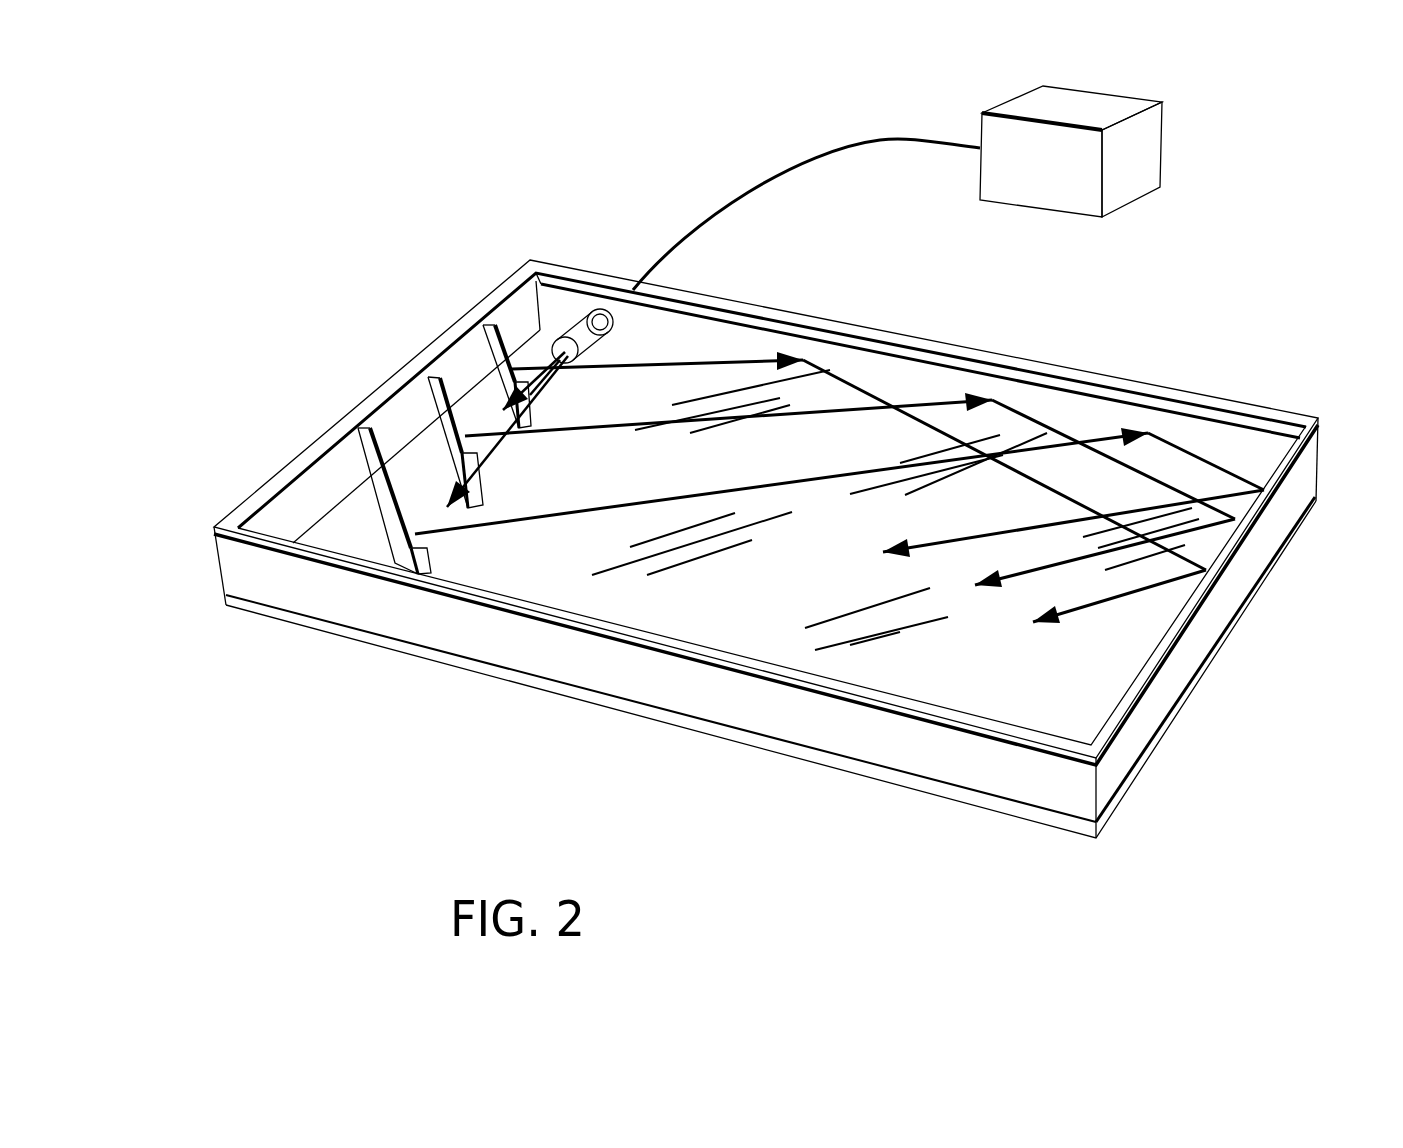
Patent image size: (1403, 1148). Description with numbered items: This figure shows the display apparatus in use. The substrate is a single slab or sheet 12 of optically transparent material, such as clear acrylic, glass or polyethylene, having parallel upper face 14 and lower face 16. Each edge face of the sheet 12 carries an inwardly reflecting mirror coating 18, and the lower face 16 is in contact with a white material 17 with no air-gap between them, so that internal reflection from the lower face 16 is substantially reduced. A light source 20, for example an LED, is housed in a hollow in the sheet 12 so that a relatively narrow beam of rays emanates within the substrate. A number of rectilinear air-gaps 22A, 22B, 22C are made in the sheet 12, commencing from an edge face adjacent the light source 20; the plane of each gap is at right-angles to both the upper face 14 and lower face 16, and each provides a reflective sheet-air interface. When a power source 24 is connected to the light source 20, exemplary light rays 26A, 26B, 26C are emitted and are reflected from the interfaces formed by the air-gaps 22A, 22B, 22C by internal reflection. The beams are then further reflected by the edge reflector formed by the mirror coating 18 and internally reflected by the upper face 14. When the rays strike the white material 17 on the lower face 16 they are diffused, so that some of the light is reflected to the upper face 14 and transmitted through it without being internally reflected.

The sheet 12 is at (1105, 305).
The upper face 14 is at (1062, 700).
The lower face 16 is at (316, 688).
The white material 17 is at (527, 685).
The mirror coating 18 is at (1165, 423).
The light source 20 is at (590, 312).
The air-gap 22A is at (493, 284).
The air-gap 22B is at (384, 369).
The air-gap 22C is at (295, 458).
The power source 24 is at (1066, 182).
The light ray 26A is at (522, 357).
The light ray 26B is at (423, 410).
The light ray 26C is at (357, 488).